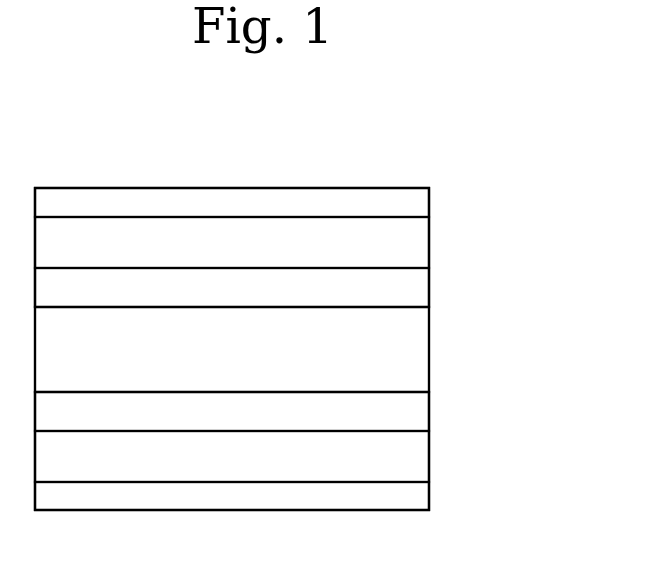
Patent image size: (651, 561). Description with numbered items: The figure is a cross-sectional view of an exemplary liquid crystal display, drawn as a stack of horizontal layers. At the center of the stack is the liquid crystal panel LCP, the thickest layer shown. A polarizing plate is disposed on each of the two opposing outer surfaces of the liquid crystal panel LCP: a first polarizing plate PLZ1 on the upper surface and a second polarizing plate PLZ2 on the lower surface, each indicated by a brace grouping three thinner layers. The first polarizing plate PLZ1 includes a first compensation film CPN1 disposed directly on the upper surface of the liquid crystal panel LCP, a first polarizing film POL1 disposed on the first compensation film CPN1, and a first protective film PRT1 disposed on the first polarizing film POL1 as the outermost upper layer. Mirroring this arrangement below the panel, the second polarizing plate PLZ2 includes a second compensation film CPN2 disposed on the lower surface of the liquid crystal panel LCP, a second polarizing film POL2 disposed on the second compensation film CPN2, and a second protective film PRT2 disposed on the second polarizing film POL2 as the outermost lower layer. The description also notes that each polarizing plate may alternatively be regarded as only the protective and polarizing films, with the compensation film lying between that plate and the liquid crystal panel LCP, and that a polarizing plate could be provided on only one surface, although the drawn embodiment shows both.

The first protective film PRT1 is at (417, 205).
The first polarizing film POL1 is at (417, 245).
The first compensation film CPN1 is at (417, 290).
The first polarizing plate PLZ1 is at (520, 187).
The liquid crystal panel LCP is at (417, 352).
The second compensation film CPN2 is at (417, 412).
The second polarizing film POL2 is at (417, 457).
The second protective film PRT2 is at (417, 499).
The second polarizing plate PLZ2 is at (520, 395).